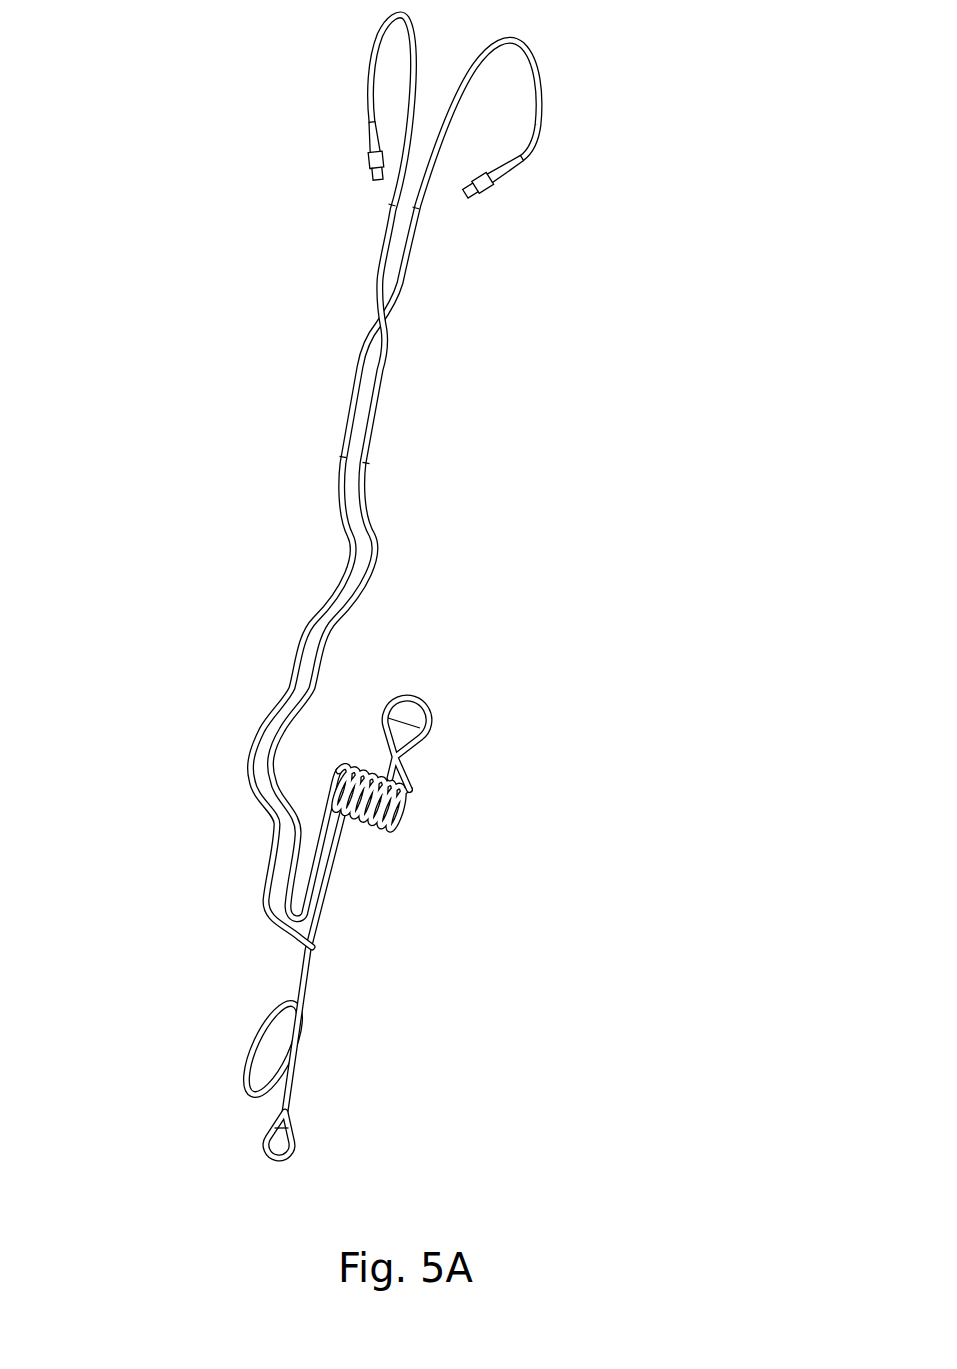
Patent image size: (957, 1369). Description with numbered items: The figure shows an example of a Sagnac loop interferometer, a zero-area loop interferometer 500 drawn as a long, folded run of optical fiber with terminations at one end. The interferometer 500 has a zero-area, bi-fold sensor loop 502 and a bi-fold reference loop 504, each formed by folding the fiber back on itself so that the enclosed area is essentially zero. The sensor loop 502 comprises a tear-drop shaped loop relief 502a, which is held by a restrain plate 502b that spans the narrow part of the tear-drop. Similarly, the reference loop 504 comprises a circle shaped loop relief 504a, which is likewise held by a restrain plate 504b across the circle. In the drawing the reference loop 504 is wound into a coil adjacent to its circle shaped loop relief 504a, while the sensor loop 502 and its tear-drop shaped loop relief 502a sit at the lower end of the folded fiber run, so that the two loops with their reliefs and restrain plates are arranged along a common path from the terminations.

The interferometer 500 is at (290, 595).
The sensor loop 502 is at (243, 1045).
The loop relief 502a is at (296, 1136).
The restrain plate 502b is at (271, 1128).
The reference loop 504 is at (415, 803).
The loop relief 504a is at (428, 700).
The restrain plate 504b is at (405, 712).